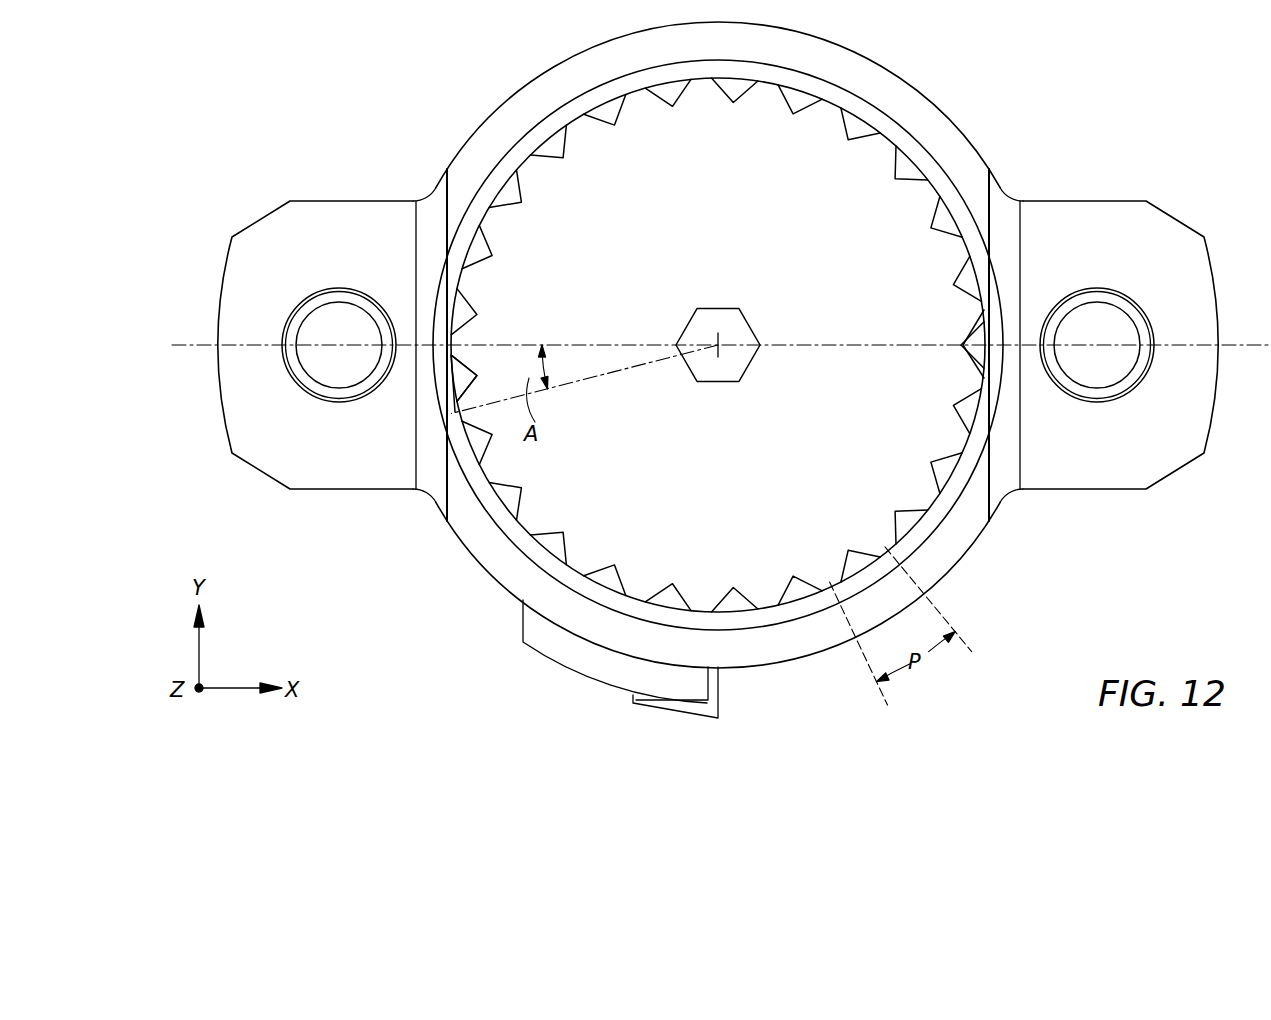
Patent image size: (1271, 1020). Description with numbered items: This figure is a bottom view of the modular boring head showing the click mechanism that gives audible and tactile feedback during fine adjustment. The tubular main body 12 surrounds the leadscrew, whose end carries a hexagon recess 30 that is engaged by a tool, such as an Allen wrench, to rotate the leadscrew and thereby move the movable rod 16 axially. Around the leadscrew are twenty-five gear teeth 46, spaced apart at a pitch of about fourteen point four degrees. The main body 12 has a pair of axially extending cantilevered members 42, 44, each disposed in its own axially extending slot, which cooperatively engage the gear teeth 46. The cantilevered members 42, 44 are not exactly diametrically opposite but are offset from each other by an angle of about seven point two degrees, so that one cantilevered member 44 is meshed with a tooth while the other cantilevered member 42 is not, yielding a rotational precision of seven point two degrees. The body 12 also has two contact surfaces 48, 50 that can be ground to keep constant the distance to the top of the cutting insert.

The tubular main body 12 is at (470, 105).
The movable rod 16 is at (903, 170).
The hexagon recess 30 is at (730, 328).
The cantilevered member 42 is at (460, 420).
The cantilevered member 44 is at (990, 355).
The gear teeth 46 is at (520, 537).
The contact surface 48 is at (347, 230).
The contact surface 50 is at (1089, 230).